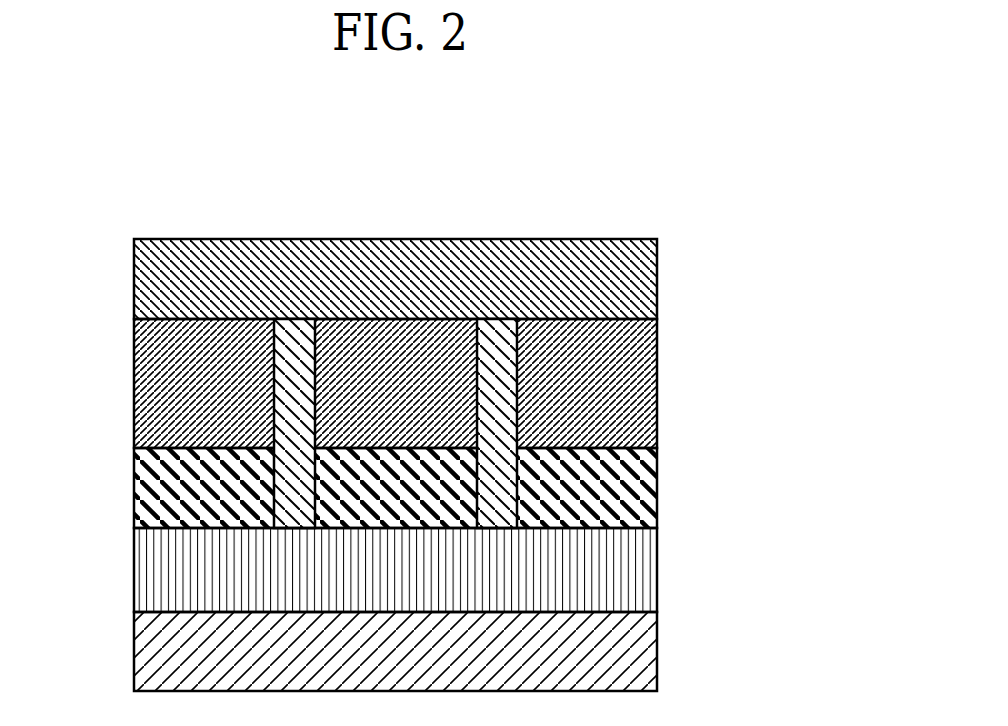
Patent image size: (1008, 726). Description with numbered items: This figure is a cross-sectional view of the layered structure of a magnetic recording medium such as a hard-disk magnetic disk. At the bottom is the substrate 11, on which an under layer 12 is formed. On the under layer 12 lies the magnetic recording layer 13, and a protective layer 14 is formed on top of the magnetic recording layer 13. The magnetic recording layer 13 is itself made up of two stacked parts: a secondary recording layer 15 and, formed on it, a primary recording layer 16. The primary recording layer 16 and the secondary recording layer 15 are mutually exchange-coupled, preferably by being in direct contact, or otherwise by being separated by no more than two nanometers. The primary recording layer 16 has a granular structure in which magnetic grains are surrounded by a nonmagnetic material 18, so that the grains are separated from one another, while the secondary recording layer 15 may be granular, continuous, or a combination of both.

The substrate 11 is at (657, 652).
The under layer 12 is at (657, 571).
The magnetic recording layer 13 is at (488, 423).
The protective layer 14 is at (657, 280).
The secondary recording layer 15 is at (462, 488).
The primary recording layer 16 is at (657, 392).
The nonmagnetic material 18 is at (503, 320).